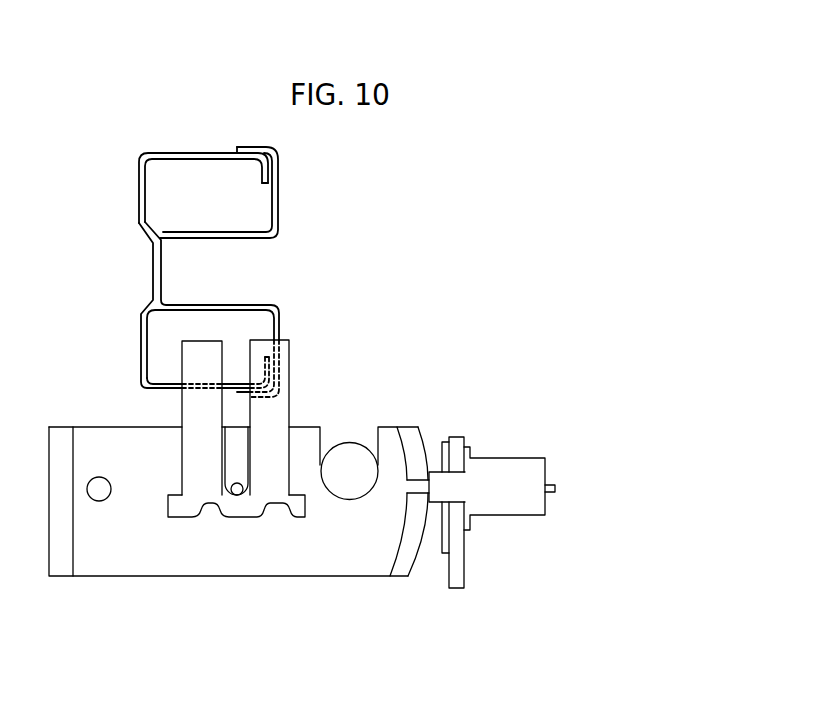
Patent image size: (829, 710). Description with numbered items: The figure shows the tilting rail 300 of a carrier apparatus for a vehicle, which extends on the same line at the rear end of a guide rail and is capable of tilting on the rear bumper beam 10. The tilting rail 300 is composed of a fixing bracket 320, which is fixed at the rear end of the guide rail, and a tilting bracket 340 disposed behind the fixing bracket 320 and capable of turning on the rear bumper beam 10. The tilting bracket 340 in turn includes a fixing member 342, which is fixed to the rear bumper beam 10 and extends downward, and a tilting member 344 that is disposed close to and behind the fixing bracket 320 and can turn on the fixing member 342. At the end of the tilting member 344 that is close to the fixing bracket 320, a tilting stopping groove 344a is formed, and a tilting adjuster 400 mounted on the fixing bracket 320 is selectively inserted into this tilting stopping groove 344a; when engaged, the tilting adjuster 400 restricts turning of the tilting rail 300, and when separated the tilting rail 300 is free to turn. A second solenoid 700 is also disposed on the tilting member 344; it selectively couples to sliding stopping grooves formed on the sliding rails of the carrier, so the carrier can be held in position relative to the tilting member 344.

The rear bumper beam 10 is at (157, 199).
The tilting rail 300 is at (95, 590).
The tilting bracket 340 is at (236, 504).
The fixing member 342 is at (274, 475).
The tilting member 344 is at (267, 627).
The tilting stopping groove 344a is at (412, 488).
The second solenoid 700 is at (343, 448).
The fixing bracket 320 is at (458, 555).
The tilting adjuster 400 is at (530, 473).